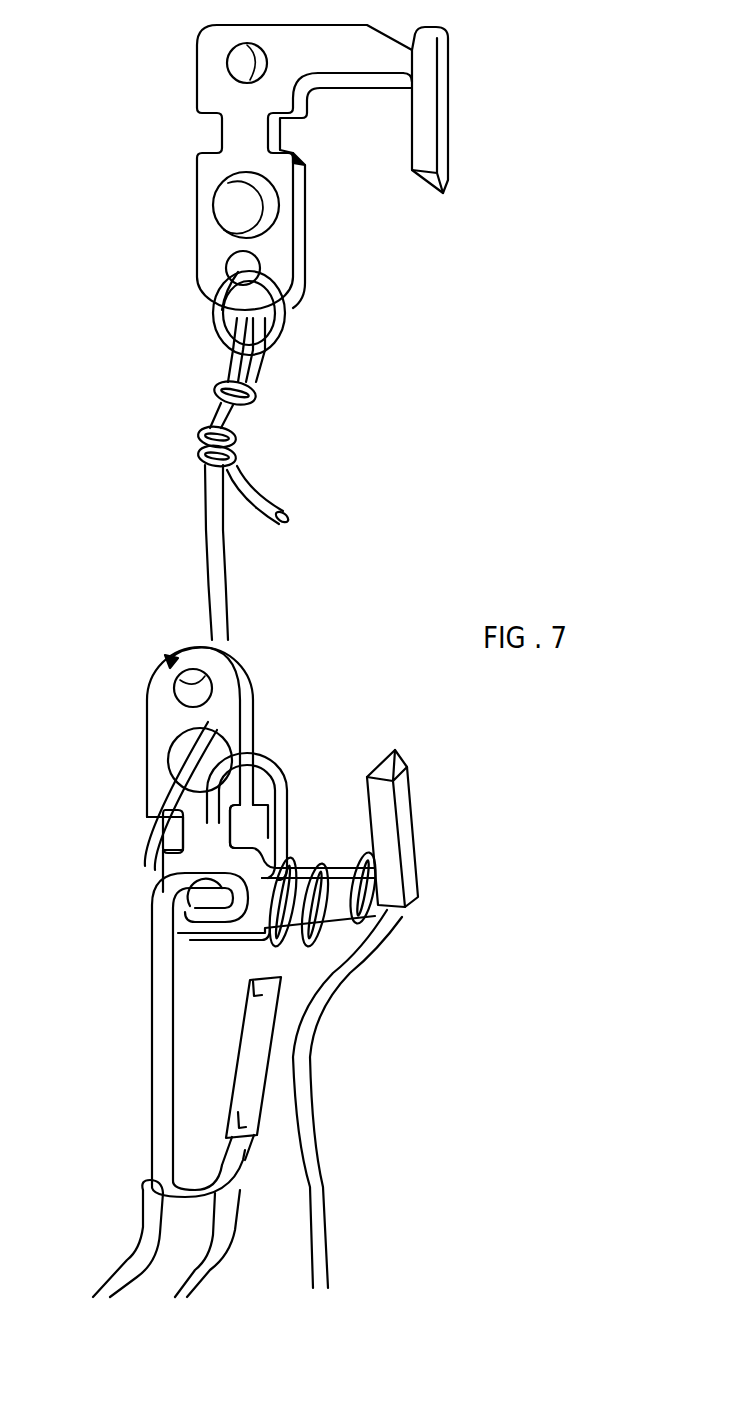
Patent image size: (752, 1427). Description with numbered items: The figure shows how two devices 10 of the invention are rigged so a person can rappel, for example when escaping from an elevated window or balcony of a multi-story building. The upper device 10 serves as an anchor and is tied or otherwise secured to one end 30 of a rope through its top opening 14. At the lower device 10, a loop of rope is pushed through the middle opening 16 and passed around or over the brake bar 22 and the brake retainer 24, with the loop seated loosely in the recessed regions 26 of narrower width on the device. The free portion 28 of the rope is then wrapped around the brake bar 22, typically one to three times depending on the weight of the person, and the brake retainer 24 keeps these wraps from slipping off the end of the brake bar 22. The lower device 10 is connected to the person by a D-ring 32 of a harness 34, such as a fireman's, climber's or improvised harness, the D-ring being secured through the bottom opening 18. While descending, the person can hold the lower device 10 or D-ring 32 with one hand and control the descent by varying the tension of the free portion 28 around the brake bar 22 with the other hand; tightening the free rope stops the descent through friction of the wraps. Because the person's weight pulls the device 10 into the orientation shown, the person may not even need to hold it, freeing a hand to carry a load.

The device 10 is at (316, 199).
The opening 14 is at (229, 266).
The middle opening 16 is at (232, 230).
The opening 18 is at (244, 73).
The brake bar 22 is at (372, 88).
The brake retainer 24 is at (448, 107).
The recessed region 26 is at (170, 830).
The free portion of the rope 28 is at (308, 1067).
The rope end 30 is at (262, 493).
The D-ring 32 is at (152, 1052).
The harness 34 is at (140, 1255).